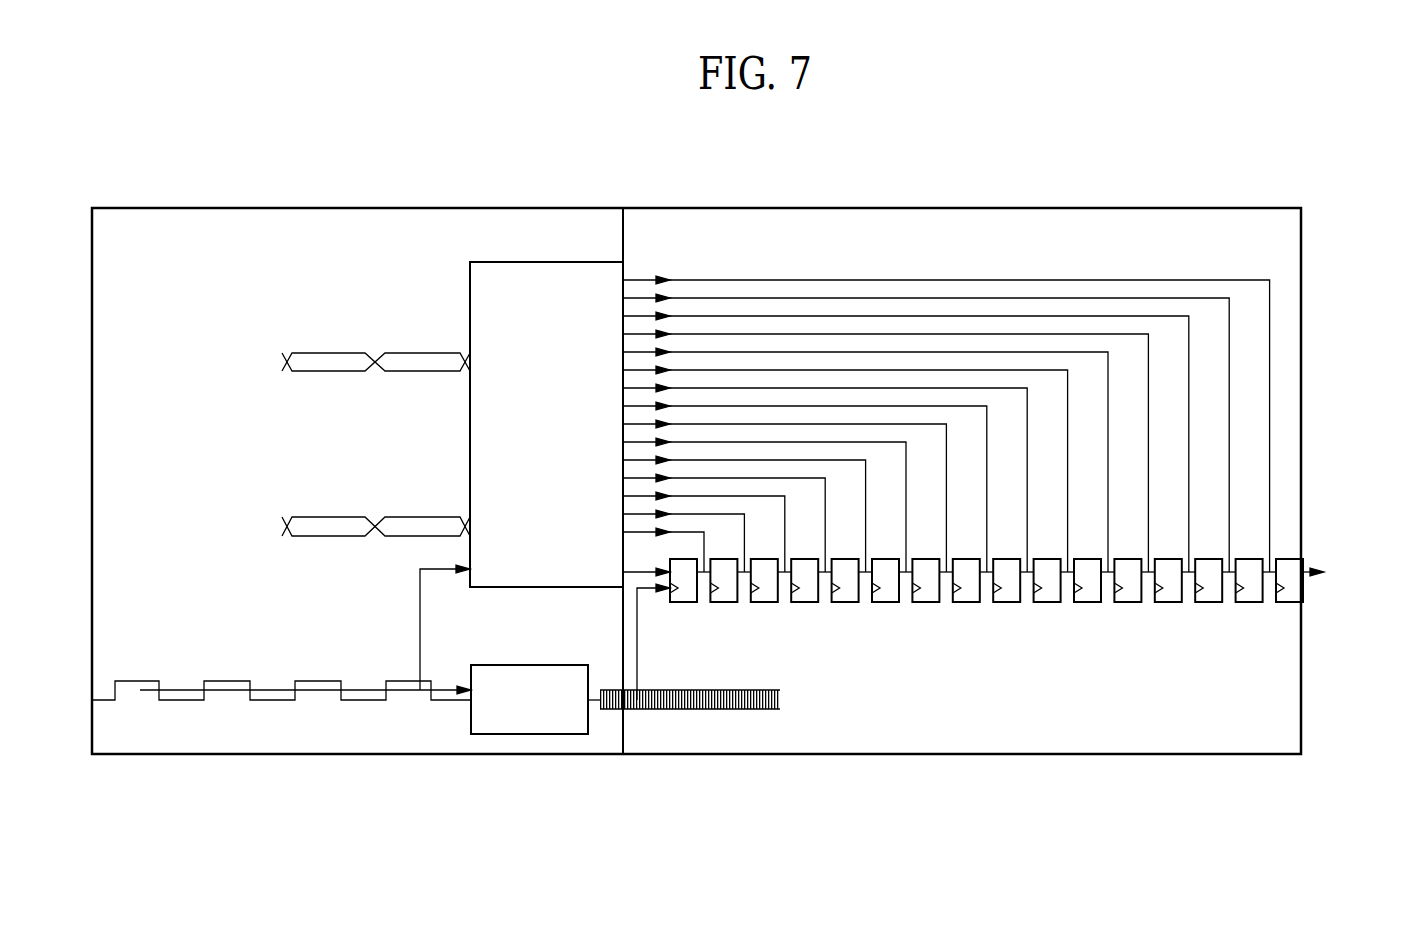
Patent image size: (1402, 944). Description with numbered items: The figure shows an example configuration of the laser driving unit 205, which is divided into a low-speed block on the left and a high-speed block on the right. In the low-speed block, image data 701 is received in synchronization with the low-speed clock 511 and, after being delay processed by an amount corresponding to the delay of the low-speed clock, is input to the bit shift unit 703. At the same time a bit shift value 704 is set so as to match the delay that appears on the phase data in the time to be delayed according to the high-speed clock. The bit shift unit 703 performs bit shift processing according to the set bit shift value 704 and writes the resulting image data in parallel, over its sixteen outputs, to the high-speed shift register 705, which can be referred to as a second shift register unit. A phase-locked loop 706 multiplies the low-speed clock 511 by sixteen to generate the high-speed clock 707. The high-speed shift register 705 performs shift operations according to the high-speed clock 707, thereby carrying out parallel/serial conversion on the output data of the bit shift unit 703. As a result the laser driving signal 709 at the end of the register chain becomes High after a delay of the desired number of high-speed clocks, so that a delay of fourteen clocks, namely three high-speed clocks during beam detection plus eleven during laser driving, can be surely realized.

The laser driving unit 205 is at (834, 209).
The bit shift unit 703 is at (548, 262).
The image data 701 is at (390, 316).
The bit shift value 704 is at (408, 484).
The low-speed clock 511 is at (366, 680).
The phase-locked loop (PLL) 706 is at (532, 664).
The high-speed clock 707 is at (687, 690).
The high-speed shift register 705 is at (885, 604).
The laser driving signal 709 is at (1360, 534).